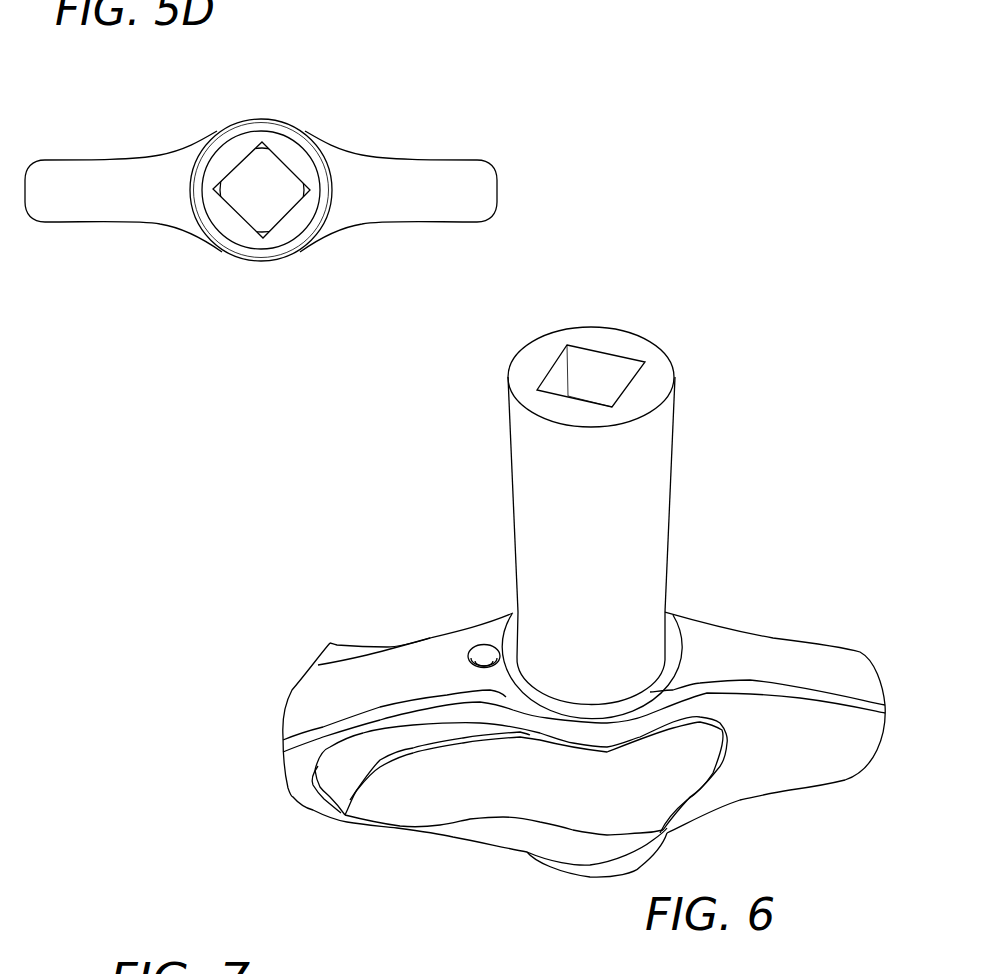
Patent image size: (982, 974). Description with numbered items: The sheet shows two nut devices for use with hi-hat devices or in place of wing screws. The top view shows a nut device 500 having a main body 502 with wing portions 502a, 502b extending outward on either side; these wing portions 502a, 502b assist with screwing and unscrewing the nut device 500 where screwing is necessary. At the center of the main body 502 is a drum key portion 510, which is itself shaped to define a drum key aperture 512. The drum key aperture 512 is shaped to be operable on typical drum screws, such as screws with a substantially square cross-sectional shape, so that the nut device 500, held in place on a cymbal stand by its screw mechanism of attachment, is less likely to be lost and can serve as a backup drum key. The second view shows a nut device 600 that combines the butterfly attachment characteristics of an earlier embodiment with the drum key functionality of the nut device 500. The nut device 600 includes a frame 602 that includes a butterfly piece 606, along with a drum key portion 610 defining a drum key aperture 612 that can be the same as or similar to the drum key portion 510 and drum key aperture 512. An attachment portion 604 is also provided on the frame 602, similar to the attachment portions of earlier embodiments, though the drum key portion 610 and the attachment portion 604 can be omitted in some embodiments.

In FIG. 5D, the nut device 500 is at (535, 116).
In FIG. 5D, the main body 502 is at (234, 251).
In FIG. 5D, the wing portion 502a is at (70, 176).
In FIG. 5D, the wing portion 502b is at (447, 176).
In FIG. 5D, the drum key portion 510 is at (278, 133).
In FIG. 5D, the drum key aperture 512 is at (268, 171).
In FIG. 6, the nut device 600 is at (748, 414).
In FIG. 6, the frame 602 is at (803, 788).
In FIG. 6, the attachment portion 604 is at (555, 867).
In FIG. 6, the butterfly piece 606 is at (392, 790).
In FIG. 6, the drum key portion 610 is at (520, 472).
In FIG. 6, the drum key aperture 612 is at (600, 375).